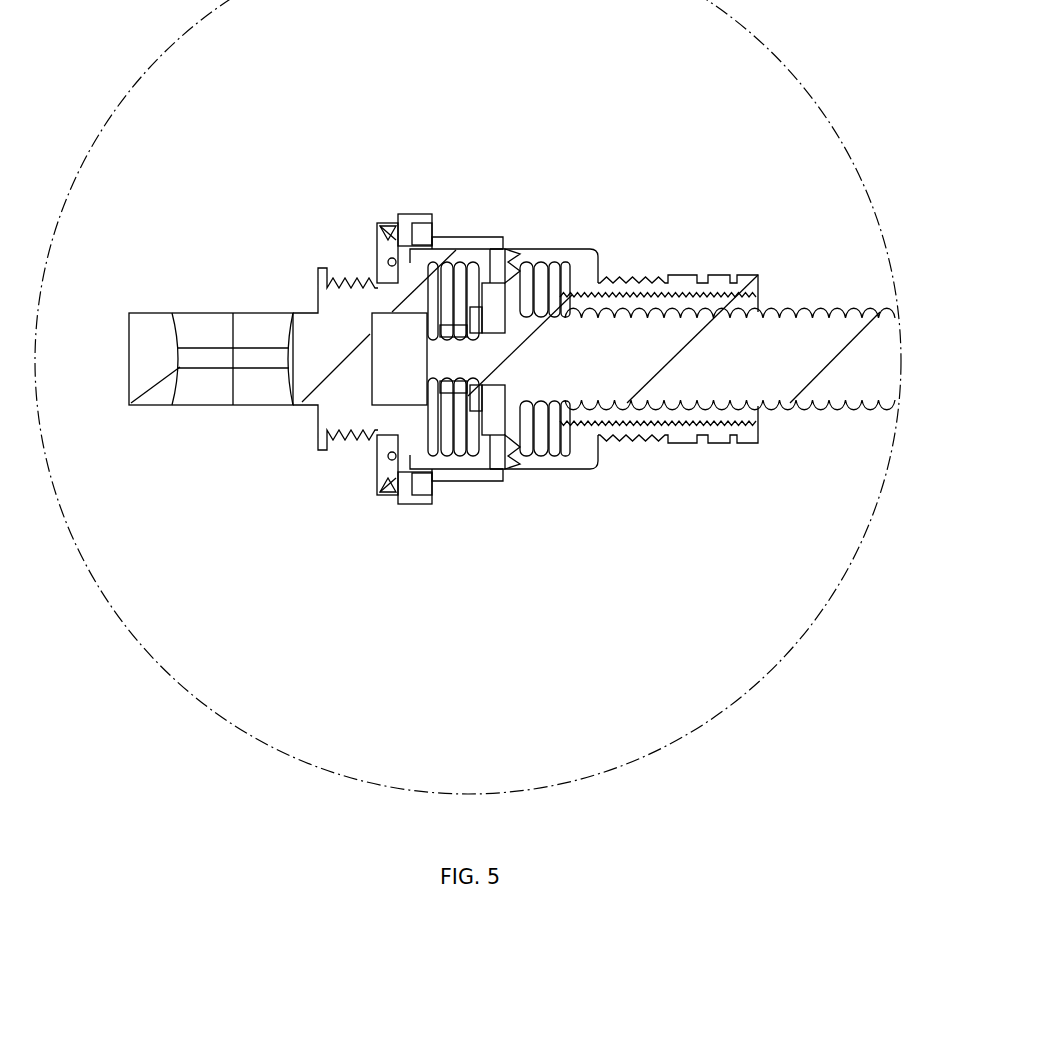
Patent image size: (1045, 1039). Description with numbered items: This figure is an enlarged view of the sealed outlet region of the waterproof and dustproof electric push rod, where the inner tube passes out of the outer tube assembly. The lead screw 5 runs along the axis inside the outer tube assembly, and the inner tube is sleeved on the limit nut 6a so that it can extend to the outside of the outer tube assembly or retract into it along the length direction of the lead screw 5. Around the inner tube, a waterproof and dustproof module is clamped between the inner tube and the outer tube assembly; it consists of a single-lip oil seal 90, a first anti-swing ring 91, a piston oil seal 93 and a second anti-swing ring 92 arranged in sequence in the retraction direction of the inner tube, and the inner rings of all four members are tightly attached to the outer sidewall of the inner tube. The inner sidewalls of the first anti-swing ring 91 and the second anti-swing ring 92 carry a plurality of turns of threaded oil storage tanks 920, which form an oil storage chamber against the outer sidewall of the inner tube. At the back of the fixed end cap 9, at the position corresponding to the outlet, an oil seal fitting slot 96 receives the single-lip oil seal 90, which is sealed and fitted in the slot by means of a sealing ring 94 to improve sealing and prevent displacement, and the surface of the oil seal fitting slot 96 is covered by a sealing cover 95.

The fixed end cap 9 is at (393, 497).
The sealing ring 94 is at (388, 268).
The oil seal fitting slot 96 is at (397, 222).
The sealing cover 95 is at (405, 235).
The single-lip oil seal 90 is at (378, 480).
The piston oil seal 93 is at (502, 483).
The first anti-swing ring 91 is at (463, 460).
The second anti-swing ring 92 is at (585, 470).
The threaded oil storage tanks 920 is at (540, 263).
The lead screw 5 is at (838, 307).
The limit nut 6a is at (725, 443).